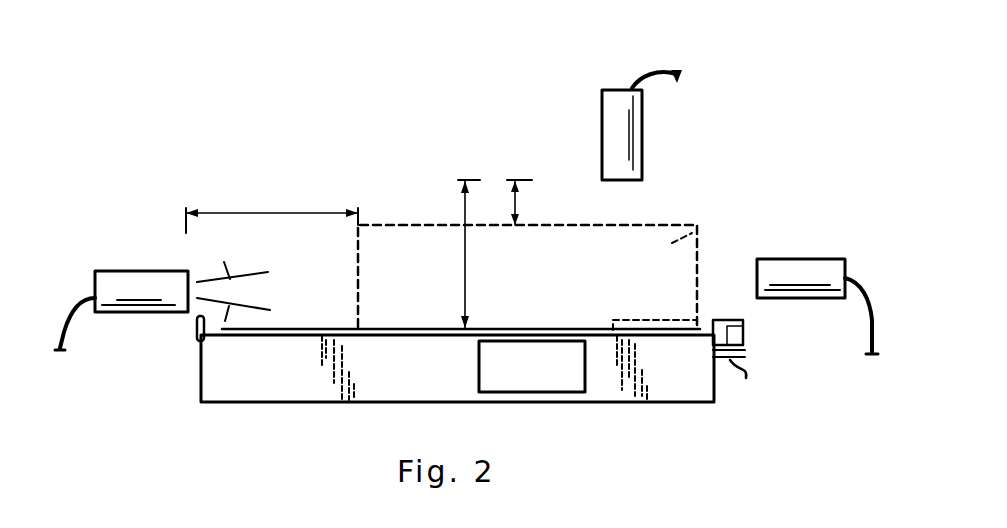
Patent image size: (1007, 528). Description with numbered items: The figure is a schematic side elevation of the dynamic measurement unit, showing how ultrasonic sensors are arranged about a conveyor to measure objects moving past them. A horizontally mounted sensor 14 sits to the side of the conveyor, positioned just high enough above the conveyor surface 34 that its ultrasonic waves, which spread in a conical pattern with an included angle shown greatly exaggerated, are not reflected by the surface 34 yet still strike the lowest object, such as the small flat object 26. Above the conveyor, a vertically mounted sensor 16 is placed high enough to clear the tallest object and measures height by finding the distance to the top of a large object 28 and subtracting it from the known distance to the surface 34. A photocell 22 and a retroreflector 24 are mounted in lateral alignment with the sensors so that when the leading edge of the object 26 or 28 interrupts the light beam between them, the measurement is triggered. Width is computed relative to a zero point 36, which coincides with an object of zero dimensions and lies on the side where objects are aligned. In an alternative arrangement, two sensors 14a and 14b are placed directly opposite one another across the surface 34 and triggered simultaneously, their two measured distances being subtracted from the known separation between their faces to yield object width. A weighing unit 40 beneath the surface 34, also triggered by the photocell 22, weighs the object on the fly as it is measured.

The sensor 14 is at (121, 325).
The sensor 14a is at (120, 305).
The sensor 14b is at (797, 290).
The sensor 16 is at (628, 141).
The photocell 22 is at (743, 338).
The retroreflector 24 is at (197, 333).
The small object 26 is at (613, 322).
The large object 28 is at (697, 227).
The surface 34 is at (318, 330).
The zero point 36 is at (689, 336).
The weighing unit 40 is at (542, 377).